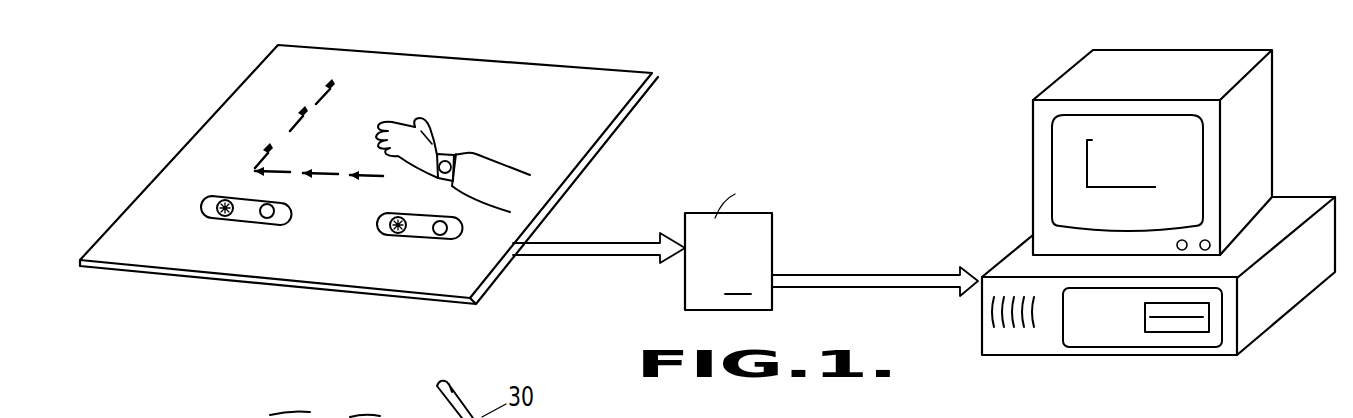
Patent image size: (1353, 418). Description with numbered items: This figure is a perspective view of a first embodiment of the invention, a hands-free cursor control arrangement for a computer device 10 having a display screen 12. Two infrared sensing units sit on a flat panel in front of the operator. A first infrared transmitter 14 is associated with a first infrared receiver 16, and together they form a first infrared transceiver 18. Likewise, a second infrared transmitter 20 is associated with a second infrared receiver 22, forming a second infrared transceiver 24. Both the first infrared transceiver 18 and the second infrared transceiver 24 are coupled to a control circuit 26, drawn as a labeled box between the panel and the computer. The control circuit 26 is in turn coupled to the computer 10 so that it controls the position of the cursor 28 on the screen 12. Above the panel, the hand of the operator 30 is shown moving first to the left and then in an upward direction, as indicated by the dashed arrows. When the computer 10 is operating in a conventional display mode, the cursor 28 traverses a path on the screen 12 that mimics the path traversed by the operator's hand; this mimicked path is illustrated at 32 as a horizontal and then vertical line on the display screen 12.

The computer device 10 is at (707, 200).
The display screen 12 is at (1158, 202).
The first infrared transmitter 14 is at (226, 232).
The first infrared receiver 16 is at (268, 219).
The infrared transceiver 18 is at (236, 224).
The second infrared transmitter 20 is at (397, 248).
The second infrared receiver 22 is at (441, 236).
The infrared transceiver 24 is at (412, 242).
The control circuit 26 is at (806, 240).
The cursor 28 is at (1087, 140).
The hand of the operator 30 is at (432, 147).
The path on the screen 32 is at (1145, 187).